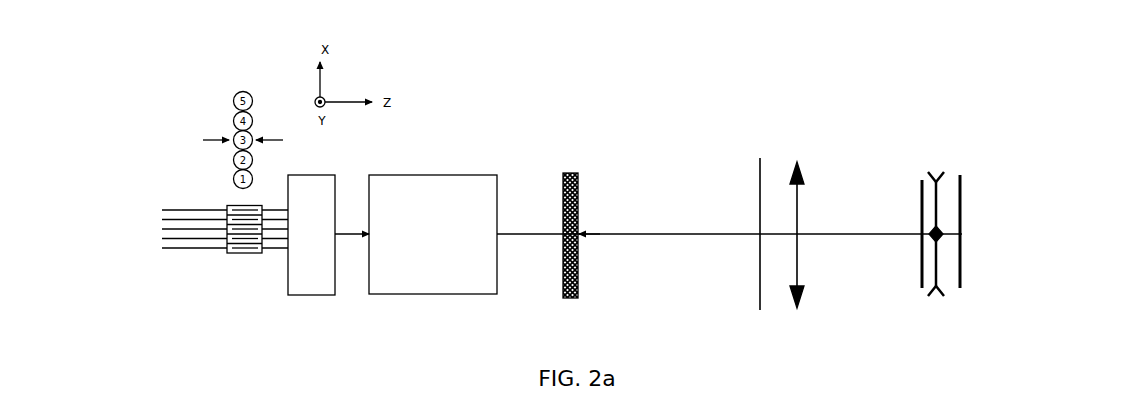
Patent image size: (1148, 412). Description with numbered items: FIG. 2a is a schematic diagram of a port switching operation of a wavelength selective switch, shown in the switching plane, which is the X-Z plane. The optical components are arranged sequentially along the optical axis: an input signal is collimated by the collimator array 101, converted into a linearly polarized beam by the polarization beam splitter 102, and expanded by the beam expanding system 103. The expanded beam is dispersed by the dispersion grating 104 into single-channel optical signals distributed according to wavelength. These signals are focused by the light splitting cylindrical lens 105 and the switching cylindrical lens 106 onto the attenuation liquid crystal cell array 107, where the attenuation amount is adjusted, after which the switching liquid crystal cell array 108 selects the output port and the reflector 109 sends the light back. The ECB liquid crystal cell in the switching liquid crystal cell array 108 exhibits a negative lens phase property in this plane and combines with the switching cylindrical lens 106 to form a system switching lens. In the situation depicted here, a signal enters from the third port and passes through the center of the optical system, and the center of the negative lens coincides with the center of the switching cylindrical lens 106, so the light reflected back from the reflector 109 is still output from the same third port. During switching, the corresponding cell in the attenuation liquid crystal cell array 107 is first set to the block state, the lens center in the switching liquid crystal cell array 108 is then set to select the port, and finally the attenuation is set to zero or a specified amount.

The collimator array 101 is at (225, 246).
The polarization beam splitter 102 is at (311, 235).
The beam expanding system 103 is at (433, 234).
The dispersion grating 104 is at (569, 225).
The light splitting cylindrical lens 105 is at (749, 234).
The switching cylindrical lens 106 is at (806, 235).
The attenuation liquid crystal cell array 107 is at (911, 244).
The switching liquid crystal cell array 108 is at (936, 217).
The reflector 109 is at (971, 241).